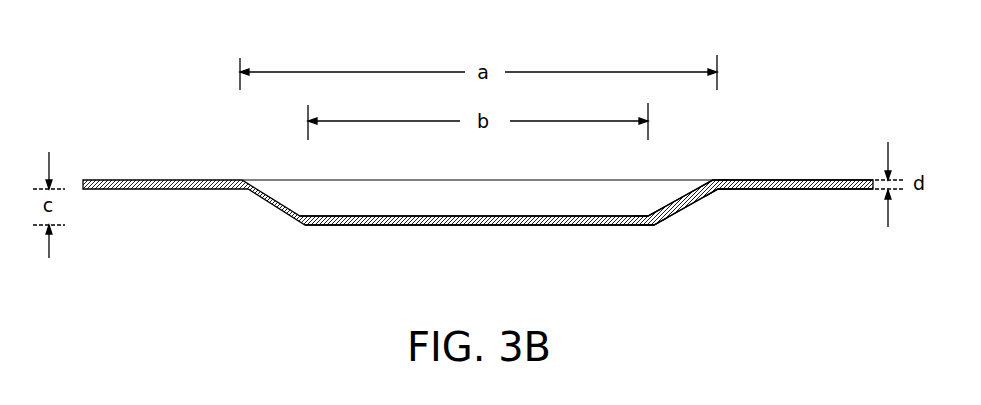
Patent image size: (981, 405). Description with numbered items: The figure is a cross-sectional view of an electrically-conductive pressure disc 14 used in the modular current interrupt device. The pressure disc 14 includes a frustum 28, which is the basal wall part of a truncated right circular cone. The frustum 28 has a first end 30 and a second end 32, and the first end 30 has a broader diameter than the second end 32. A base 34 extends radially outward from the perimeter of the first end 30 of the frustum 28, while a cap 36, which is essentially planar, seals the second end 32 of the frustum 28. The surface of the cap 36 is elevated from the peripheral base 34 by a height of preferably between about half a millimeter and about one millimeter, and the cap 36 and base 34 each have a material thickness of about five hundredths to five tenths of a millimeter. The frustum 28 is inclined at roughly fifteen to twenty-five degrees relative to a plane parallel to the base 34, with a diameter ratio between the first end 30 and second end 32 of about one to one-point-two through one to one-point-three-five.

The electrically-conductive pressure disc 14 is at (121, 111).
The frustum 28 is at (680, 208).
The first end 30 is at (717, 191).
The second end 32 is at (650, 227).
The base 34 is at (830, 191).
The cap 36 is at (380, 226).